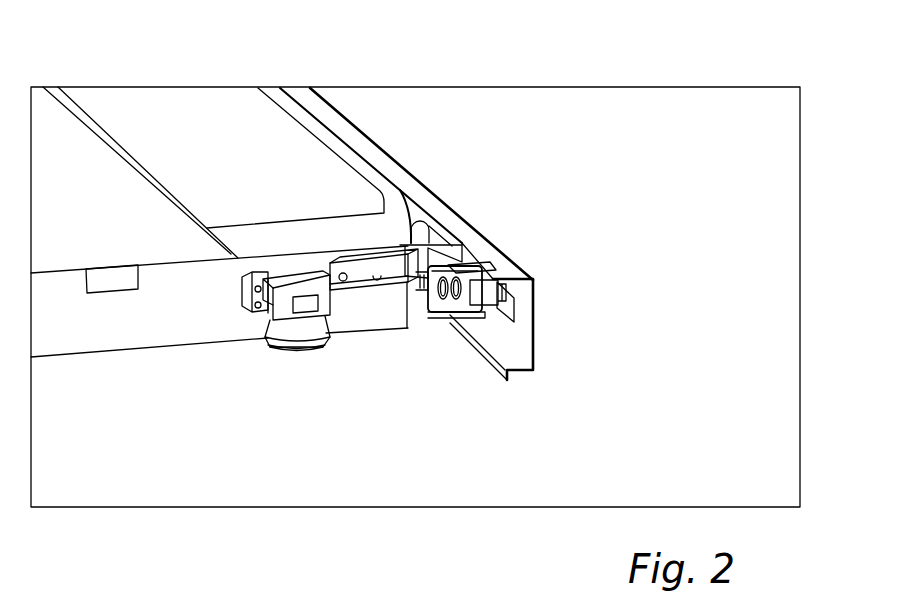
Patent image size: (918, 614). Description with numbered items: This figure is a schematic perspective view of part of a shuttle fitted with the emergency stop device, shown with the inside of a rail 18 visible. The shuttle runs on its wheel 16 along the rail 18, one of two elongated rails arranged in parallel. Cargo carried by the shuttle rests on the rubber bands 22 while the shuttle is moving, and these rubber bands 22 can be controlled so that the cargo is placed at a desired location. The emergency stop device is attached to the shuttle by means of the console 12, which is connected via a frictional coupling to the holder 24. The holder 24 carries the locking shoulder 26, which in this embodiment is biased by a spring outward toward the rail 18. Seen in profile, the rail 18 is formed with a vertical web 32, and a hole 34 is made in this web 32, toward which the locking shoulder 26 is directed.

The console 12 is at (367, 277).
The wheel 16 is at (438, 242).
The rail 18 is at (548, 377).
The rubber band 22 is at (358, 168).
The holder 24 is at (457, 258).
The locking shoulder 26 is at (472, 290).
The vertical web 32 is at (523, 333).
The hole 34 is at (513, 297).